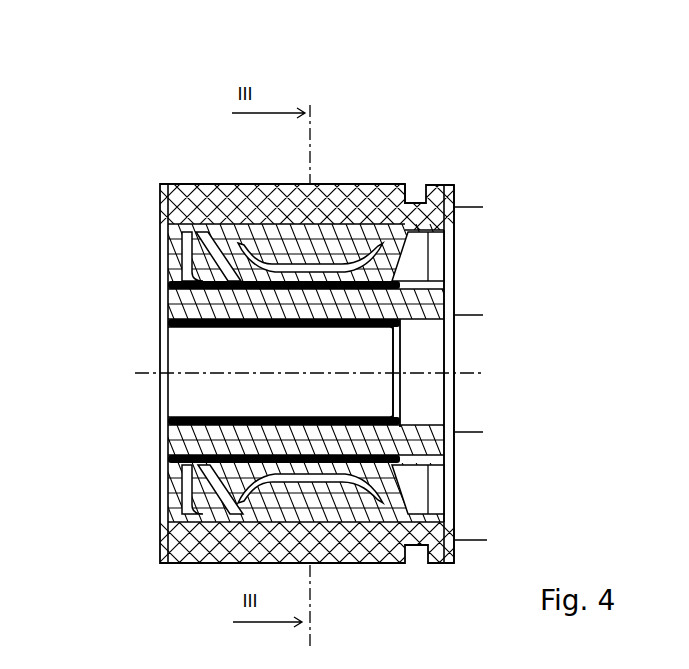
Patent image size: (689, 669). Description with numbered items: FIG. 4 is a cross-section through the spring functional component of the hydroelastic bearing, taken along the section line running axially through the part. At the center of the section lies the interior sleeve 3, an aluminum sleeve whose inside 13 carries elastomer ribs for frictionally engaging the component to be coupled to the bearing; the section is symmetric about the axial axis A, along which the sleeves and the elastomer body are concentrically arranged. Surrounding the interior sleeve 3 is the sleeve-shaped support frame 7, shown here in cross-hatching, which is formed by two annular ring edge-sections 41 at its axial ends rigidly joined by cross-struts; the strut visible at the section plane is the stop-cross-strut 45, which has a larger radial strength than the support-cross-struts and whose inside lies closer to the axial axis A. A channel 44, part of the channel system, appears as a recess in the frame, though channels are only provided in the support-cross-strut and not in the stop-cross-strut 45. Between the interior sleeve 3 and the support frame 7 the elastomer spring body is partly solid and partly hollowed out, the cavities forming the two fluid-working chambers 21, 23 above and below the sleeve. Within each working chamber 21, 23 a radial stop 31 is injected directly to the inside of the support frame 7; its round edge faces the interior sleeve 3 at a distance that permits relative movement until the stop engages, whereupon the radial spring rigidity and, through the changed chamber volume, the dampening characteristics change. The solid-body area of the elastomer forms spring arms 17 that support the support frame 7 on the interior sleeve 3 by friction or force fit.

The ring edge-sections 41 is at (160, 213).
The support frame 7 is at (206, 184).
The spring arms 17 is at (184, 248).
The radial stop 31 is at (350, 184).
The working chamber 21 is at (412, 270).
The working chamber 23 is at (432, 492).
The channel 44 is at (412, 203).
The stop-cross-strut 45 is at (314, 184).
The inside 13 is at (427, 432).
The interior sleeve 3 is at (448, 305).
The axial axis A is at (485, 368).